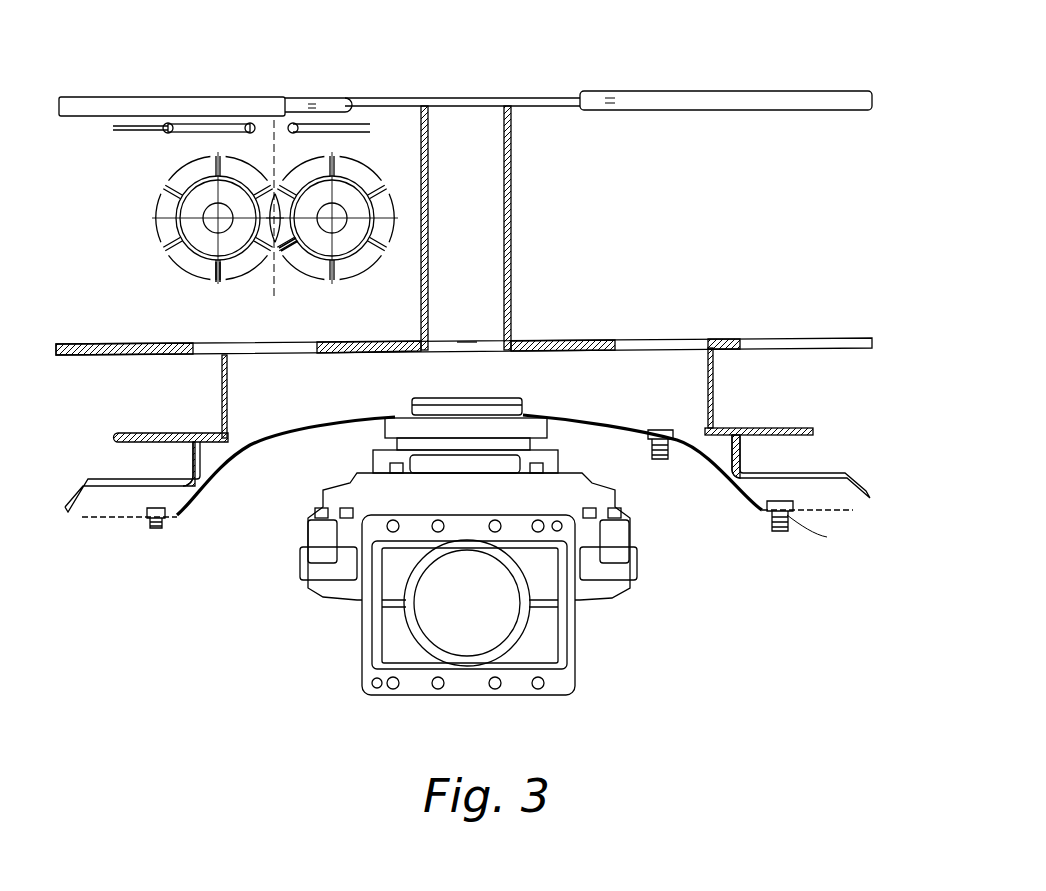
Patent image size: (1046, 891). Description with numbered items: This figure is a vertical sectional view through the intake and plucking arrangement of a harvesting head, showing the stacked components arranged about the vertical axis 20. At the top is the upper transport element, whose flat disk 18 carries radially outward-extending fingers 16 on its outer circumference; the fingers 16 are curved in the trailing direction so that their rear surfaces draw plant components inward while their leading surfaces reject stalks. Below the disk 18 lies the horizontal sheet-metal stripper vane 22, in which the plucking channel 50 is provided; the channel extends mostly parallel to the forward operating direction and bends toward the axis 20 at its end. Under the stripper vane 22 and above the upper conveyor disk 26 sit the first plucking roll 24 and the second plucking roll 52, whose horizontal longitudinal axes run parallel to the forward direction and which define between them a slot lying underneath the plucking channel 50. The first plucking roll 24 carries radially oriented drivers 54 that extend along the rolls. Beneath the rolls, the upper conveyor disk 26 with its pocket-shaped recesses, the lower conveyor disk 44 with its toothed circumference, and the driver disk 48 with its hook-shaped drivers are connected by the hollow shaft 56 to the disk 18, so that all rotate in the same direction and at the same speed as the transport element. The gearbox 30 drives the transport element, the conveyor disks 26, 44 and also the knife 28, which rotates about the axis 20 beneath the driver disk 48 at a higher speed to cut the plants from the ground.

The fingers 16 is at (737, 103).
The flat disk 18 is at (552, 98).
The vertical axis 20 is at (484, 78).
The sheet-metal stripper vane 22 is at (187, 134).
The first plucking roll 24 is at (205, 240).
The upper conveyor disk 26 is at (840, 342).
The rotating knife 28 is at (847, 512).
The gearbox 30 is at (545, 643).
The lower conveyor disk 44 is at (797, 427).
The driver disk 48 is at (860, 483).
The plucking channel 50 is at (280, 125).
The second plucking roll 52 is at (352, 228).
The drivers 54 is at (222, 272).
The hollow shaft 56 is at (512, 242).